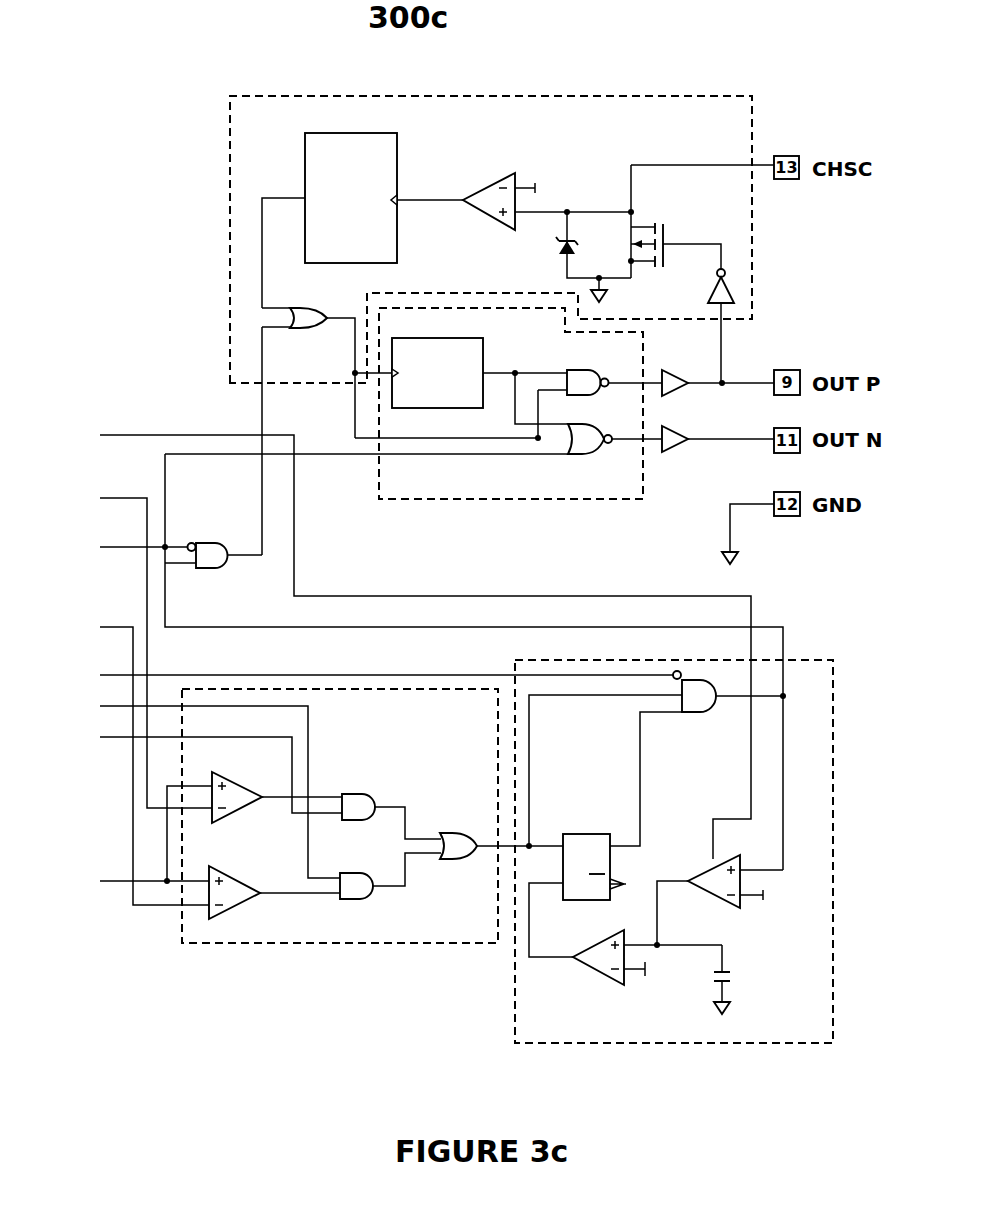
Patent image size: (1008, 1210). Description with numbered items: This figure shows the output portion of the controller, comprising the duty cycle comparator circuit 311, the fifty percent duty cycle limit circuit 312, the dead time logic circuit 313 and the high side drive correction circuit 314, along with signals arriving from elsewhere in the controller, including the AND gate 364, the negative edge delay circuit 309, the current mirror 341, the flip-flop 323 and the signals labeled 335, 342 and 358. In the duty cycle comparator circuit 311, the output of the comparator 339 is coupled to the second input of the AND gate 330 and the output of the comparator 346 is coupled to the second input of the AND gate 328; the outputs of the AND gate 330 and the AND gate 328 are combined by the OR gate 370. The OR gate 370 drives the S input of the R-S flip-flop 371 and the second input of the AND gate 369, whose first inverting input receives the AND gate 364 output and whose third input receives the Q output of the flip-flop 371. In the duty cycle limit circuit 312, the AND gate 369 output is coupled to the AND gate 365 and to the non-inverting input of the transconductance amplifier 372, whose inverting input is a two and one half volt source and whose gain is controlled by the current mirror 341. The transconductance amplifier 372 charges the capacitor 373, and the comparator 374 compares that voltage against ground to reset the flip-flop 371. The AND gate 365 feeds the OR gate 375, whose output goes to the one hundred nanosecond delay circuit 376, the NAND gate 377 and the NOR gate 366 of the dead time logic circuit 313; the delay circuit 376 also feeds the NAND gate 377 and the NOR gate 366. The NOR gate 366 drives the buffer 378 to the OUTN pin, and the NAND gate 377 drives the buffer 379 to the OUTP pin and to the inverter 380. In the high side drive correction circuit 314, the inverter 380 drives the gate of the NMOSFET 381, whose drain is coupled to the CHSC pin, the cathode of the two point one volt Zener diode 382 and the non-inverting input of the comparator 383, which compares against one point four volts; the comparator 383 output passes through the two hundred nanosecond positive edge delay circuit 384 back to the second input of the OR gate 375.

The high side drive correction circuit 314 is at (231, 222).
The positive edge delay circuit 384 is at (307, 163).
The comparator 383 is at (514, 190).
The Zener diode 382 is at (577, 255).
The NMOSFET 381 is at (674, 234).
The inverter 380 is at (703, 326).
The OR gate 375 is at (308, 359).
The dead time logic circuit 313 is at (379, 494).
The delay circuit 376 is at (461, 370).
The NAND gate 377 is at (483, 393).
The buffer 379 is at (692, 371).
The NOR gate 366 is at (392, 429).
The buffer 378 is at (693, 430).
The AND gate 365 is at (213, 447).
The current mirror 341 is at (389, 642).
The signal 335 is at (119, 648).
The negative edge delay circuit 309 is at (406, 662).
The signal 342 is at (118, 760).
The AND gate 364 is at (350, 675).
The flip-flop 323 is at (69, 698).
The signal 358 is at (119, 839).
The duty cycle comparator circuit 311 is at (180, 937).
The comparator 339 is at (277, 787).
The comparator 346 is at (274, 882).
The AND gate 330 is at (389, 804).
The AND gate 328 is at (389, 874).
The OR gate 370 is at (558, 777).
The 50% duty cycle limit circuit 312 is at (515, 995).
The R-S flip-flop 371 is at (605, 834).
The AND gate 369 is at (728, 705).
The transconductance amplifier 372 is at (735, 895).
The comparator 374 is at (644, 951).
The capacitor 373 is at (746, 979).